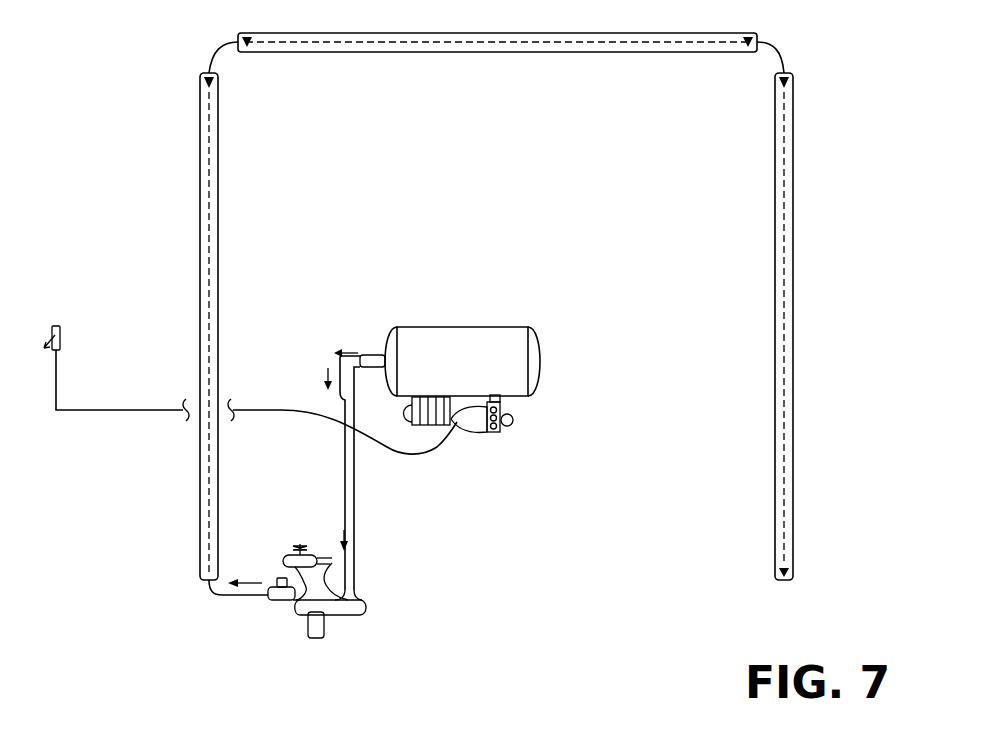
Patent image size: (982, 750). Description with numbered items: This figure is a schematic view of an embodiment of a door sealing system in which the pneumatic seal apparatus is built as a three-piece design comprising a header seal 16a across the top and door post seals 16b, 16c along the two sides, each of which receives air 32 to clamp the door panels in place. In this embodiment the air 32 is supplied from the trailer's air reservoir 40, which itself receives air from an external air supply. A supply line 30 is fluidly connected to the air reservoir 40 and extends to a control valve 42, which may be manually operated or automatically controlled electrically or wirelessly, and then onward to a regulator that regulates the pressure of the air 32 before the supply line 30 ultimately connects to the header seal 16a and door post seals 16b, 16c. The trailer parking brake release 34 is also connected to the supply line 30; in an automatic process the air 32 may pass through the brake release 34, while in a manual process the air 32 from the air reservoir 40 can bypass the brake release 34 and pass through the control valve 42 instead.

The header seal 16a is at (468, 33).
The door post seal 16b is at (200, 282).
The door post seal 16c is at (793, 316).
The air 32 is at (318, 33).
The supply line 30 is at (60, 383).
The air reservoir 40 is at (512, 327).
The trailer parking brake release 34 is at (518, 438).
The control valve 42 is at (349, 632).